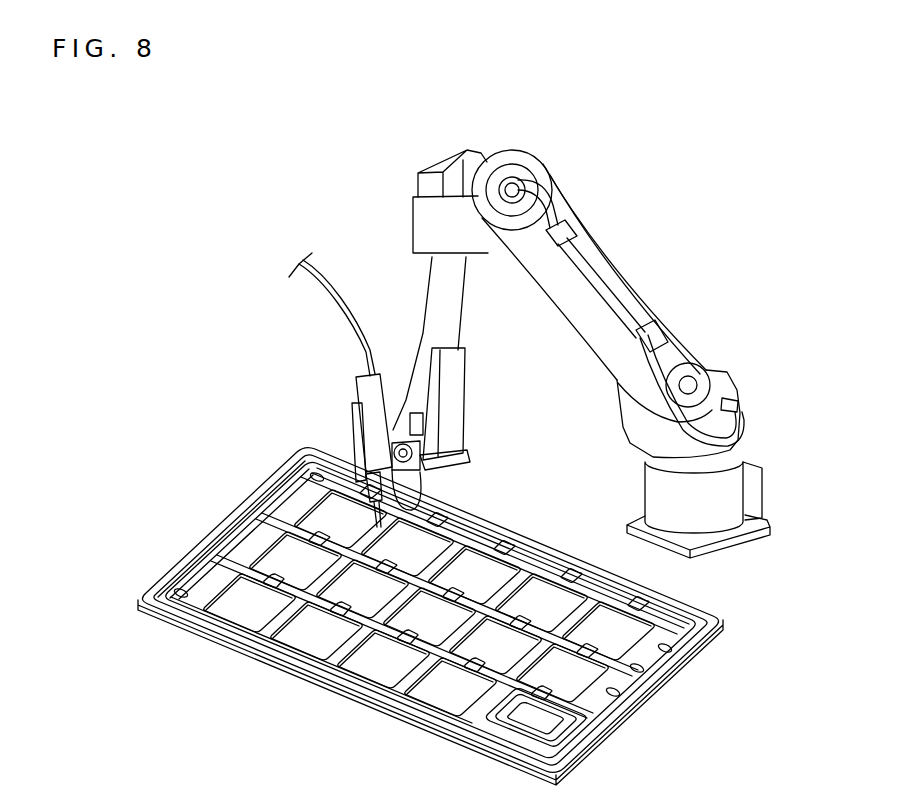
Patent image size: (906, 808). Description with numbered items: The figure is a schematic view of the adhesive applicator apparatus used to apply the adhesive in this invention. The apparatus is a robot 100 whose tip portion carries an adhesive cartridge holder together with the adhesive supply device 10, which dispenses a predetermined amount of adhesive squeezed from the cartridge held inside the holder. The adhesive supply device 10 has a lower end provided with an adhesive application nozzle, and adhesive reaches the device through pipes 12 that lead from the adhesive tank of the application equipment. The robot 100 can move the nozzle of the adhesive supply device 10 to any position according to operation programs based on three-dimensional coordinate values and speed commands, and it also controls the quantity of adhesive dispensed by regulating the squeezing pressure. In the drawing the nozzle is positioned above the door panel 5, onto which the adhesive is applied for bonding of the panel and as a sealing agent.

The robot 100 is at (606, 258).
The door panel 5 is at (537, 570).
The adhesive supply device 10 is at (350, 410).
The pipes 12 is at (341, 300).